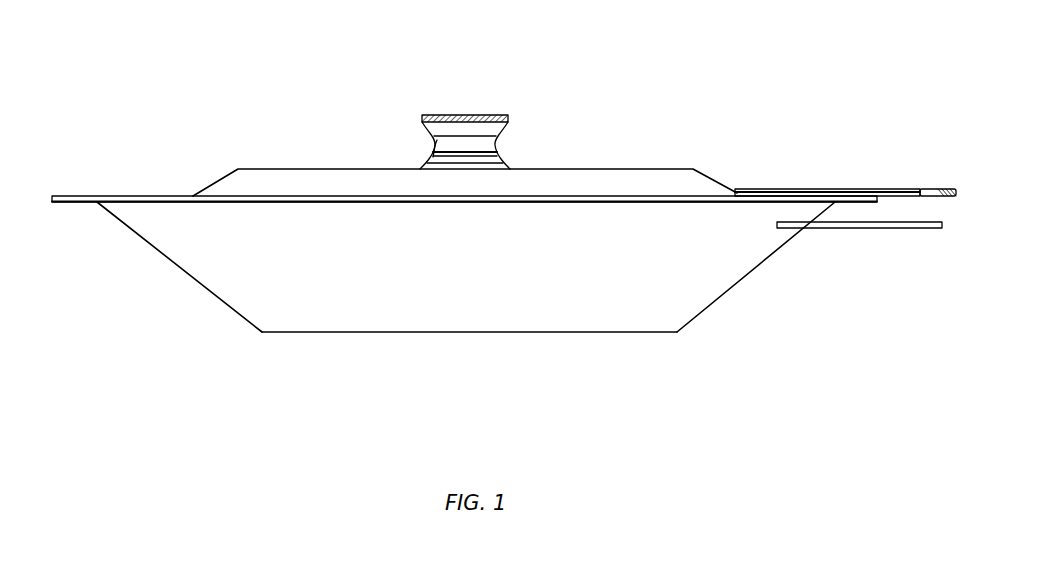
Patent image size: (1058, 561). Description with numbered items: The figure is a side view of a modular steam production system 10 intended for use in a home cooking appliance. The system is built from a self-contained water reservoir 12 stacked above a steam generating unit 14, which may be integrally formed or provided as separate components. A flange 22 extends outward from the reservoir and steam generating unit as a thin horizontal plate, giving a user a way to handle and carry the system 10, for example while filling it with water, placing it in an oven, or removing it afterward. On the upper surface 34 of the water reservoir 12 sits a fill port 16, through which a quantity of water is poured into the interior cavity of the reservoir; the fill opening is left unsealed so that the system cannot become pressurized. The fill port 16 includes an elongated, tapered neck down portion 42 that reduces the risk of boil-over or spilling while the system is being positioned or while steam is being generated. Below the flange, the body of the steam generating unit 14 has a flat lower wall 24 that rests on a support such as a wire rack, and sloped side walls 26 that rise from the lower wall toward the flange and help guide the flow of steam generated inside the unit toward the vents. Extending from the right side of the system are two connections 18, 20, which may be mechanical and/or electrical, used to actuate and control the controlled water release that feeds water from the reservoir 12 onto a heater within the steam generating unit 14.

The modular steam production system 10 is at (826, 411).
The self-contained water reservoir 12 is at (465, 141).
The steam generating unit 14 is at (466, 317).
The fill port 16 is at (440, 115).
The mechanical and/or electrical connection 18 is at (900, 189).
The mechanical and/or electrical connection 20 is at (898, 228).
The flange 22 is at (73, 196).
The lower wall 24 is at (428, 332).
The side wall 26 is at (728, 289).
The upper surface 34 is at (263, 169).
The neck down portion 42 is at (500, 142).